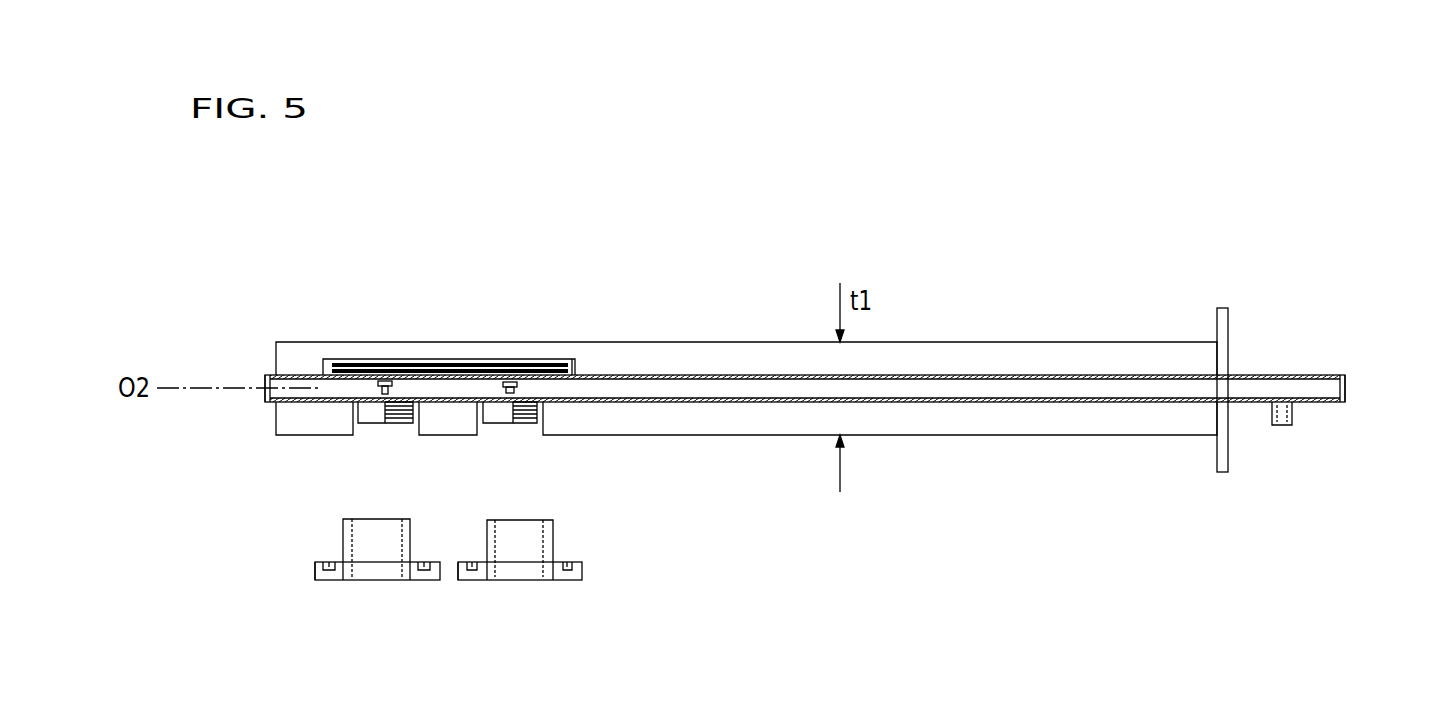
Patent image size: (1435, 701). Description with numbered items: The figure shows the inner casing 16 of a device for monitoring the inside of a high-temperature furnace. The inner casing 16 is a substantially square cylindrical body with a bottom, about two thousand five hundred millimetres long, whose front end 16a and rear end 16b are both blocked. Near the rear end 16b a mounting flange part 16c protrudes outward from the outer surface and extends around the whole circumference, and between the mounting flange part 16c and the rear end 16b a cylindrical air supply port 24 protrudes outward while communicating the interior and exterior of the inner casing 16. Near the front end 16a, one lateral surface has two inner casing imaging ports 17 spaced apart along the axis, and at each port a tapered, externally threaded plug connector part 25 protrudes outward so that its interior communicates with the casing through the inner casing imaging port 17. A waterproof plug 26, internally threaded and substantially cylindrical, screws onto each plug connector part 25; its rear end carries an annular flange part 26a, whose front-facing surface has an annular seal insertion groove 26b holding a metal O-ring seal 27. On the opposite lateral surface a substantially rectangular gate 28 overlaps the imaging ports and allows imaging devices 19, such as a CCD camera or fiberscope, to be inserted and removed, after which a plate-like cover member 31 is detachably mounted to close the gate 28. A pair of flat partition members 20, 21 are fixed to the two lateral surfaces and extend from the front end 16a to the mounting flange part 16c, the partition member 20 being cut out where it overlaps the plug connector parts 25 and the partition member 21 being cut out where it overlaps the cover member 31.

The inner casing 16 is at (1292, 228).
The front end 16a is at (262, 378).
The rear end 16b is at (1347, 390).
The mounting flange part 16c is at (1222, 308).
The inner casing imaging port 17 is at (382, 420).
The imaging device 19 is at (388, 380).
The partition member 20 is at (316, 428).
The partition member 21 is at (939, 352).
The air supply port 24 is at (1292, 412).
The plug connector part 25 is at (375, 408).
The waterproof plug 26 is at (415, 583).
The flange part 26a is at (316, 572).
The seal insertion groove 26b is at (330, 560).
The seal 27 is at (425, 572).
The gate 28 is at (448, 372).
The cover member 31 is at (367, 372).